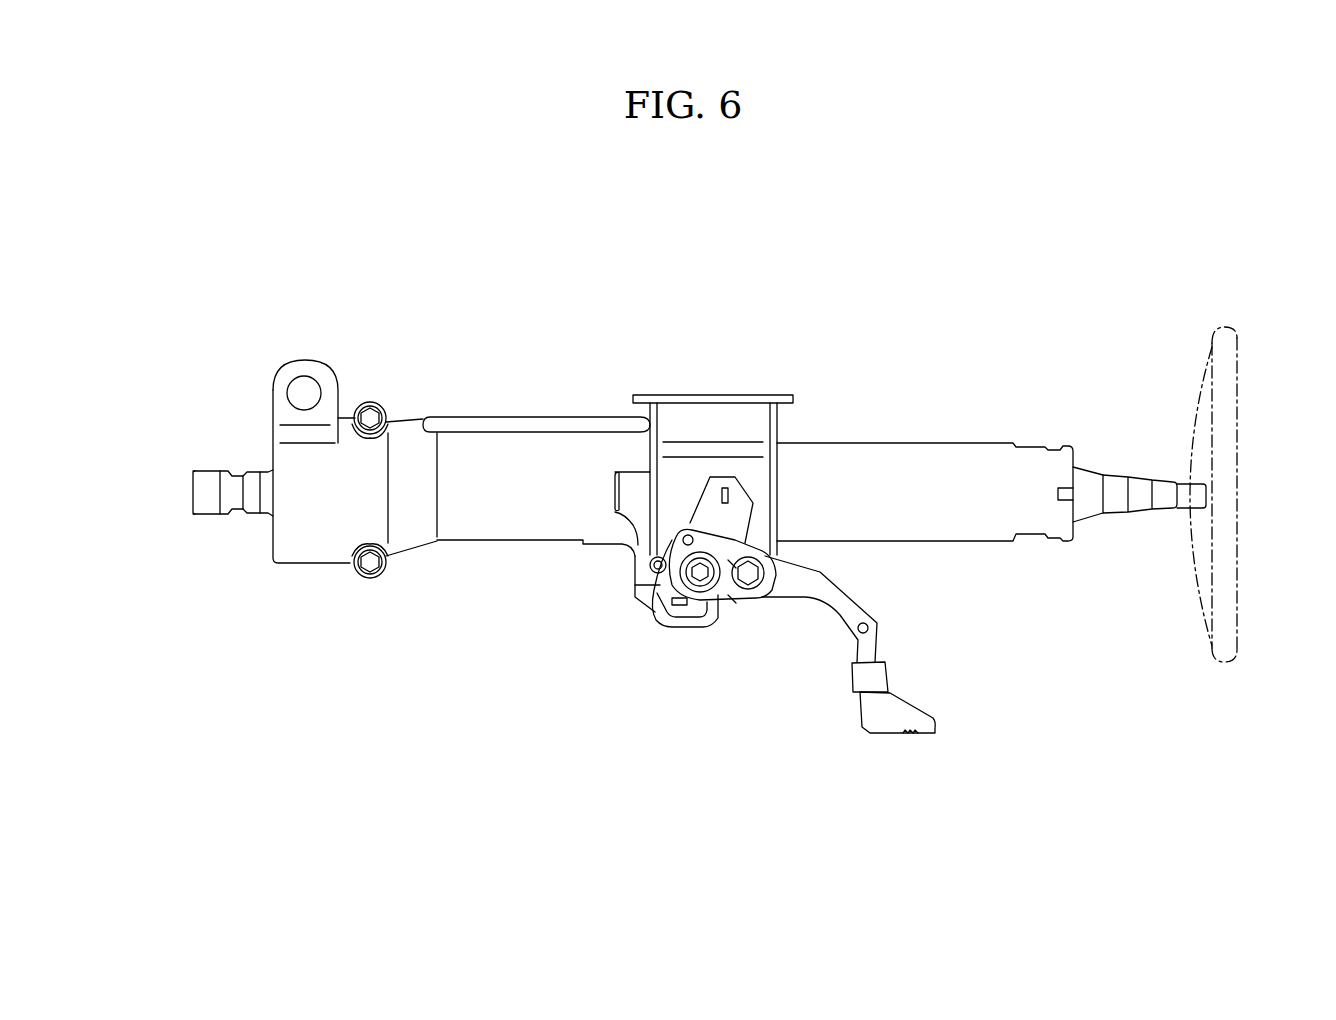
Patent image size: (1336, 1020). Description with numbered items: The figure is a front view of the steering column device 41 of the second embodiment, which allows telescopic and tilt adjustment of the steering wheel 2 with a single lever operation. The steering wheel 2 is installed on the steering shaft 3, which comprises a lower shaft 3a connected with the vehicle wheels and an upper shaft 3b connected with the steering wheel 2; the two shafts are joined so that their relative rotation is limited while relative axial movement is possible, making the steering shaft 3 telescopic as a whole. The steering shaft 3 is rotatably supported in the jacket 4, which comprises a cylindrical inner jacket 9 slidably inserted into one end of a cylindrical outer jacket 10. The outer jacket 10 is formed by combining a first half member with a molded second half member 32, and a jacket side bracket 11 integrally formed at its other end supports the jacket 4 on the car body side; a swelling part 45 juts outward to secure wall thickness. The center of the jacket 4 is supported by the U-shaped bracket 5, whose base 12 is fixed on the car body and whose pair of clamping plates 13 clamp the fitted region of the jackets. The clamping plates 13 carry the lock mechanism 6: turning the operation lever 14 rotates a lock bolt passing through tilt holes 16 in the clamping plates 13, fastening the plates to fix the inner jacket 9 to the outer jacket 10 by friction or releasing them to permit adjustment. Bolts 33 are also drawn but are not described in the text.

The steering wheel 2 is at (1222, 358).
The steering shaft 3 is at (690, 534).
The lower shaft 3a is at (210, 503).
The upper shaft 3b is at (1140, 507).
The jacket 4 is at (828, 403).
The bracket 5 is at (822, 517).
The lock mechanism 6 is at (663, 620).
The inner jacket 9 is at (925, 412).
The outer jacket 10 is at (583, 440).
The jacket side bracket 11 is at (306, 370).
The base 12 is at (780, 403).
The clamping plates 13 is at (748, 470).
The operation lever 14 is at (875, 713).
The tilt hole 16 is at (683, 606).
The second half member 32 is at (462, 525).
The bolt 33 is at (372, 408).
The steering column device 41 is at (970, 395).
The swelling part 45 is at (489, 420).